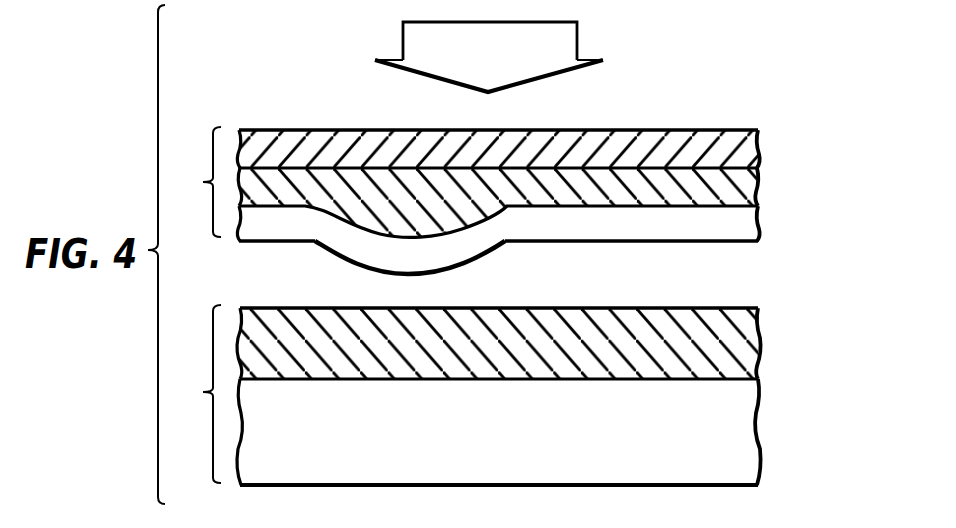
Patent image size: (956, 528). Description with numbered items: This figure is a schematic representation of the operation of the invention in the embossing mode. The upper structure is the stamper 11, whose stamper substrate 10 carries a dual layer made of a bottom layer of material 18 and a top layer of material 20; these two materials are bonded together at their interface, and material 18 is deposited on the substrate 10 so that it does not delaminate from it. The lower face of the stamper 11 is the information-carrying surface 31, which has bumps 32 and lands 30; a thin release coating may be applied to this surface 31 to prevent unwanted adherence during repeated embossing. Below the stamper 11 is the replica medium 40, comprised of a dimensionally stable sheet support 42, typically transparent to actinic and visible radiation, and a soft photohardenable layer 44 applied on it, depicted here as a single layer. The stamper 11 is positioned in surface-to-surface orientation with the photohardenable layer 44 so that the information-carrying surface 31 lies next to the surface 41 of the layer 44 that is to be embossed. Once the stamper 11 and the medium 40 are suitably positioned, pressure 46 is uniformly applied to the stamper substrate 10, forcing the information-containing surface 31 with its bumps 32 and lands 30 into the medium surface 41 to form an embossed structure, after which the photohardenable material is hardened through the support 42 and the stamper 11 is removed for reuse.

The pressure 46 is at (563, 39).
The stamper 11 is at (498, 208).
The substrate 10 is at (753, 146).
The material 18 is at (755, 187).
The material 20 is at (519, 252).
The information-carrying surface 31 is at (270, 241).
The bumps 32 is at (417, 276).
The lands 30 is at (612, 242).
The replica medium 40 is at (495, 378).
The surface 41 is at (702, 308).
The soft photohardenable layer 44 is at (526, 325).
The sheet support 42 is at (750, 438).